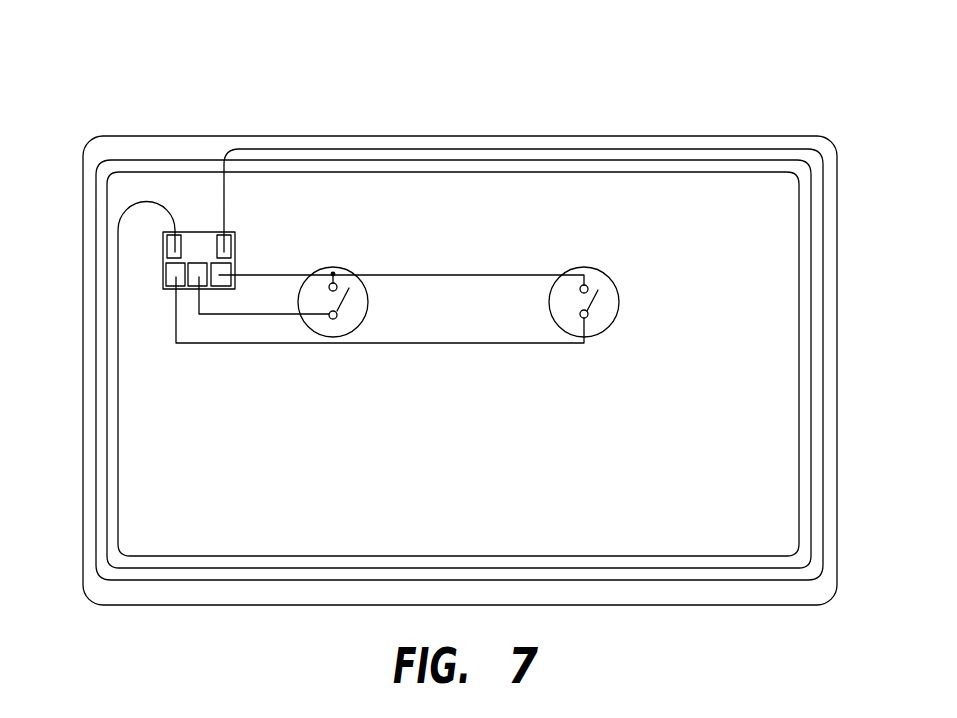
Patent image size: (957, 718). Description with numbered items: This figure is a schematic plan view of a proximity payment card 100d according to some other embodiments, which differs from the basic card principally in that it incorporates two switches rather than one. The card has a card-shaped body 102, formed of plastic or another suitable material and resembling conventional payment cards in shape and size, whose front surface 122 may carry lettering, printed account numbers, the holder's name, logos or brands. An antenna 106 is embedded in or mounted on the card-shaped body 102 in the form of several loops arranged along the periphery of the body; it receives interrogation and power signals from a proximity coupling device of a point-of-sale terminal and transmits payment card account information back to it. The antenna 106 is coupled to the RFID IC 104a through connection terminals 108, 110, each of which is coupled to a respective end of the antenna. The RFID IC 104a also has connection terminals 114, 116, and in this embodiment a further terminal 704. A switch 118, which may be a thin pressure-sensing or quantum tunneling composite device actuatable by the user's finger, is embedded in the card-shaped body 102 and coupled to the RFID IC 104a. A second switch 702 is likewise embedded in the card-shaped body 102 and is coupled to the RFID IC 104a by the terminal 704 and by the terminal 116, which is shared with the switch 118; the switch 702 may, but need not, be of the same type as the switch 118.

The proximity payment card 100d is at (460, 308).
The card-shaped body 102 is at (466, 200).
The RFID IC 104a is at (303, 260).
The antenna 106 is at (765, 148).
The connection terminal 108 is at (163, 248).
The connection terminal 110 is at (233, 248).
The connection terminal 114 is at (199, 262).
The connection terminal 116 is at (233, 268).
The switch 118 is at (345, 266).
The front surface 122 is at (752, 313).
The switch 702 is at (628, 290).
The terminal 704 is at (163, 274).